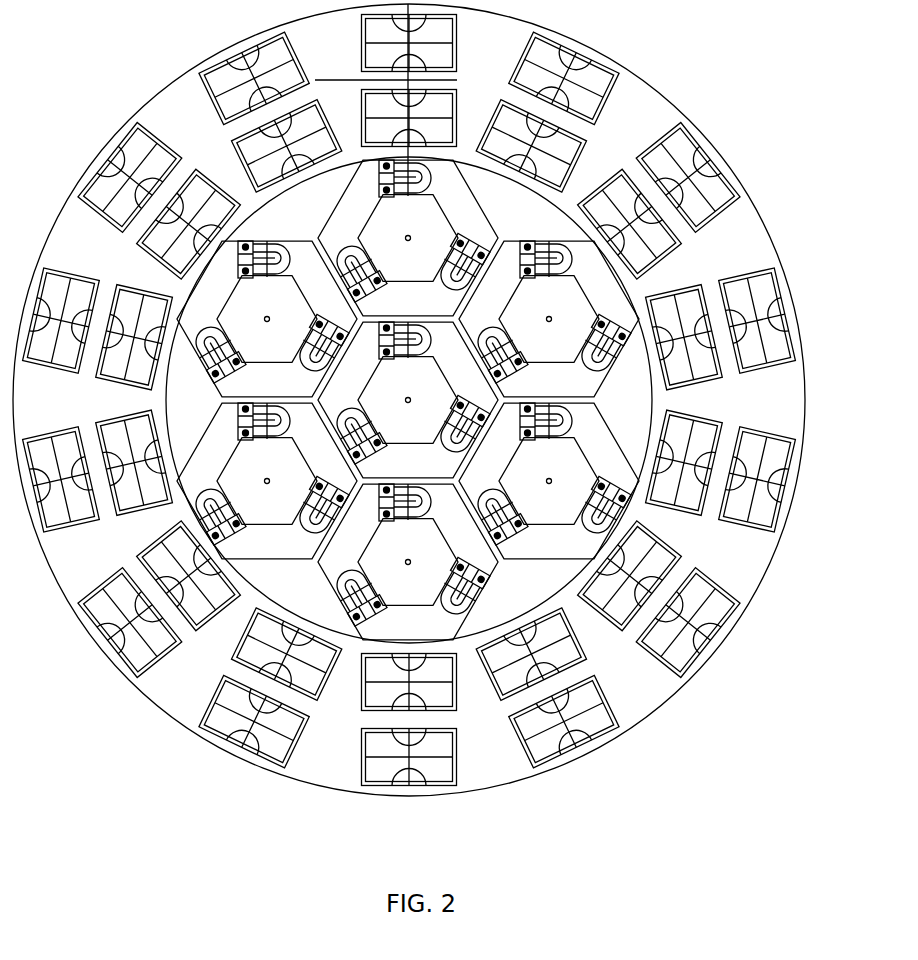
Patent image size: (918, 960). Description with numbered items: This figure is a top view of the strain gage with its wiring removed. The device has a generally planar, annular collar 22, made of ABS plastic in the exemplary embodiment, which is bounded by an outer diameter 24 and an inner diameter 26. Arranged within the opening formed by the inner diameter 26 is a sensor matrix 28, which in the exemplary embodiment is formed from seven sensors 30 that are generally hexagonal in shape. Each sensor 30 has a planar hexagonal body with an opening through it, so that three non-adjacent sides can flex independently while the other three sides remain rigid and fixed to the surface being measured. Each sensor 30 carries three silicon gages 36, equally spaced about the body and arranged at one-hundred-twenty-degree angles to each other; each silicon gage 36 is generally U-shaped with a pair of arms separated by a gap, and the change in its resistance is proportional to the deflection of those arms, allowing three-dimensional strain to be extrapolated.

The collar 22 is at (641, 83).
The outer diameter 24 is at (136, 687).
The inner diameter 26 is at (547, 200).
The sensor matrix 28 is at (470, 400).
The sensor 30 is at (298, 241).
The silicon gage 36 is at (483, 250).